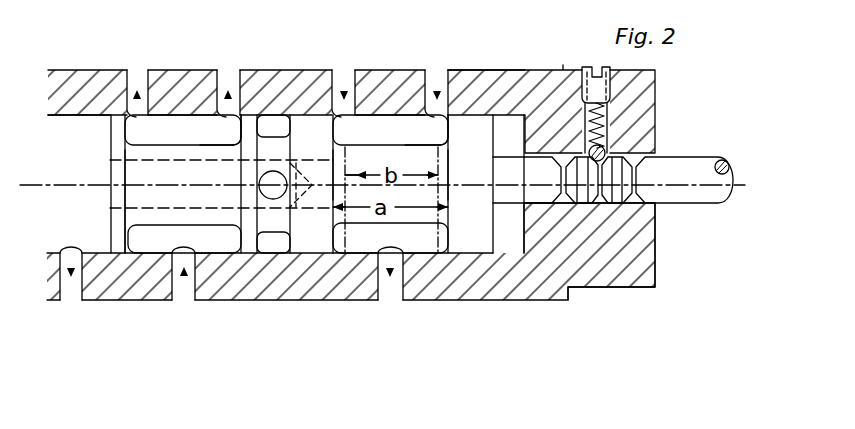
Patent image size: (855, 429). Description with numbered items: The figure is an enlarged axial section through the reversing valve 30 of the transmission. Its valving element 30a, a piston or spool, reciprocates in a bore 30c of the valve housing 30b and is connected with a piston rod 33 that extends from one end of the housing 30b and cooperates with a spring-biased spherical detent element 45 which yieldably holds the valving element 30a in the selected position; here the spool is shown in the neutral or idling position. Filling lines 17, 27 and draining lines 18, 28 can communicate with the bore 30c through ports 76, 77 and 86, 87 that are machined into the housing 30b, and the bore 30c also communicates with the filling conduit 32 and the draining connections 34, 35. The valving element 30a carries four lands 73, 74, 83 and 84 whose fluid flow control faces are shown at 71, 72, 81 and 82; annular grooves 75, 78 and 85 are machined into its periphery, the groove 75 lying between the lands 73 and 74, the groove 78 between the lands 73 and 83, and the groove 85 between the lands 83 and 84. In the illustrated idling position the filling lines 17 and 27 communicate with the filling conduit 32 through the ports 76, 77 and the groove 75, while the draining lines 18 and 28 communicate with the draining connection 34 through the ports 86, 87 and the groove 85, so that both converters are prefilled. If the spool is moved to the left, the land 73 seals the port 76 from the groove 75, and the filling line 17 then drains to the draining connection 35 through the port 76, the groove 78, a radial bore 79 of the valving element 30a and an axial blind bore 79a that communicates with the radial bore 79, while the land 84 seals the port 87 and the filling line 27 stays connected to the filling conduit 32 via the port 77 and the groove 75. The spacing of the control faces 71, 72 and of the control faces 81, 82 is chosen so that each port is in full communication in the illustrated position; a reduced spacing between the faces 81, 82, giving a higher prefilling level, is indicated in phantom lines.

The reversing valve 30 is at (80, 58).
The valving element 30a is at (480, 104).
The valve housing 30b is at (647, 273).
The bore 30c is at (85, 128).
The filling line 27 is at (139, 78).
The filling line 17 is at (228, 80).
The draining line 18 is at (346, 78).
The draining line 28 is at (440, 80).
The draining connection 35 is at (72, 290).
The filling conduit 32 is at (183, 290).
The draining connection 34 is at (392, 288).
The piston rod 33 is at (696, 160).
The spring-biased spherical detent element 45 is at (613, 143).
The control face 71 is at (240, 175).
The control face 72 is at (129, 175).
The land 73 is at (252, 240).
The land 74 is at (120, 247).
The annular groove 75 is at (158, 240).
The port 76 is at (230, 116).
The port 77 is at (142, 118).
The annular groove 78 is at (285, 240).
The radial bore 79 is at (277, 173).
The axial blind bore 79a is at (117, 203).
The control face 81 is at (336, 166).
The control face 82 is at (445, 170).
The land 83 is at (327, 240).
The land 84 is at (479, 243).
The annular groove 85 is at (433, 243).
The port 86 is at (345, 118).
The port 87 is at (437, 116).